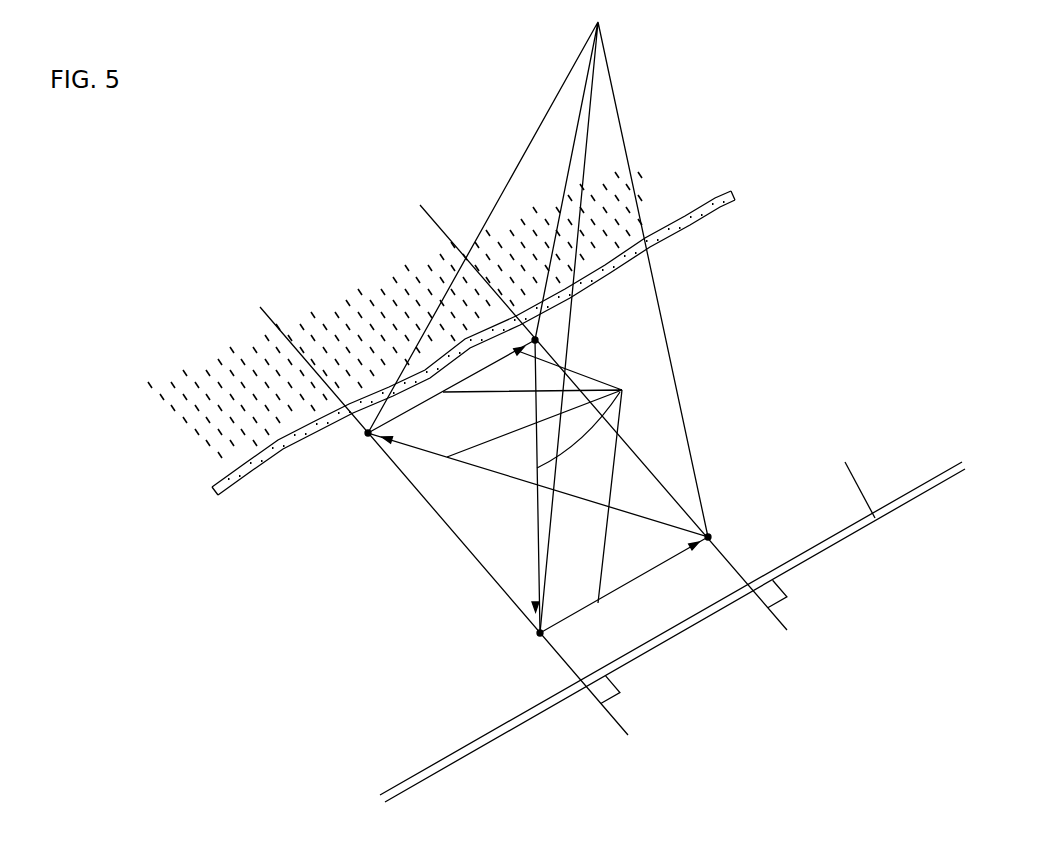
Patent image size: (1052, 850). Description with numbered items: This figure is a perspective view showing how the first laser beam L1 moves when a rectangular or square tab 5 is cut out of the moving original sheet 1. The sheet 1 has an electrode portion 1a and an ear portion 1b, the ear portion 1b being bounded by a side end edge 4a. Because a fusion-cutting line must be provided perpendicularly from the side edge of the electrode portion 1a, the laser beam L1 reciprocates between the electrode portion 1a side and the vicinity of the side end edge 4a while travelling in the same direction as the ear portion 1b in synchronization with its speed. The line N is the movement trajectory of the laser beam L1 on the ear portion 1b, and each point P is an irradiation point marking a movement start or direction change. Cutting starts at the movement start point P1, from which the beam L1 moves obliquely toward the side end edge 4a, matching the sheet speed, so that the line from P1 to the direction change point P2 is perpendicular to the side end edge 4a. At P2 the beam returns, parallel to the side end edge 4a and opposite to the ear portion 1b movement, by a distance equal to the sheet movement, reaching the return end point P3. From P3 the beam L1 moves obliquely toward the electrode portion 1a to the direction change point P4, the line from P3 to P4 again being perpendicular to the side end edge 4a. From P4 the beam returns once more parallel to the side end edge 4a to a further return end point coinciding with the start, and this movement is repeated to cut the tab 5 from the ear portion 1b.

The original sheet 1 is at (240, 375).
The electrode portion 1a is at (323, 330).
The ear portion 1b is at (874, 516).
The side end edge 4a is at (513, 727).
The tab 5 is at (637, 485).
The first laser beam L1 is at (630, 131).
The movement line N is at (543, 477).
The movement start point P1 is at (586, 341).
The direction change point P2 is at (513, 651).
The direction change point P3 is at (742, 527).
The direction change point P4 is at (349, 453).